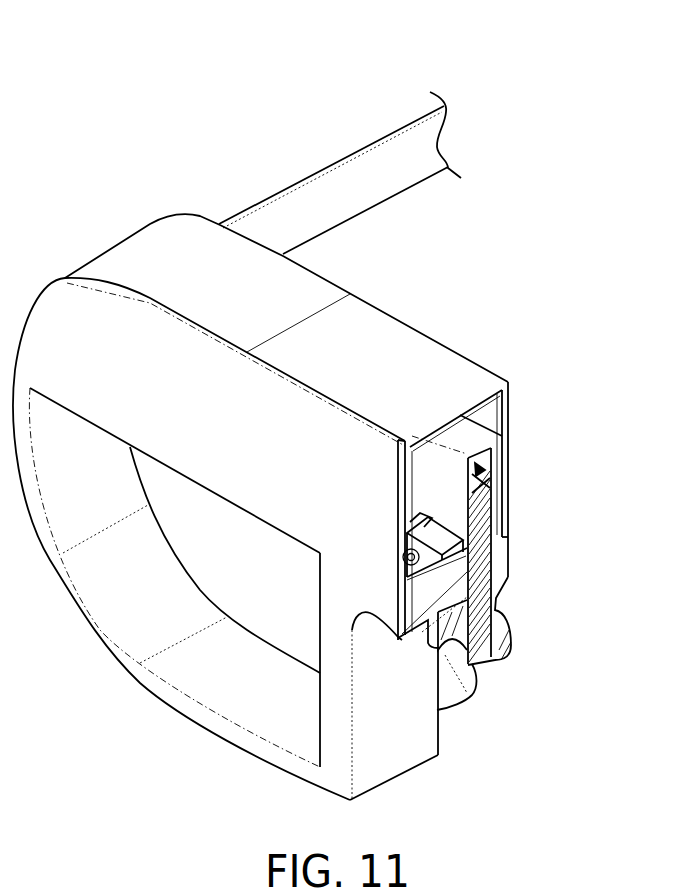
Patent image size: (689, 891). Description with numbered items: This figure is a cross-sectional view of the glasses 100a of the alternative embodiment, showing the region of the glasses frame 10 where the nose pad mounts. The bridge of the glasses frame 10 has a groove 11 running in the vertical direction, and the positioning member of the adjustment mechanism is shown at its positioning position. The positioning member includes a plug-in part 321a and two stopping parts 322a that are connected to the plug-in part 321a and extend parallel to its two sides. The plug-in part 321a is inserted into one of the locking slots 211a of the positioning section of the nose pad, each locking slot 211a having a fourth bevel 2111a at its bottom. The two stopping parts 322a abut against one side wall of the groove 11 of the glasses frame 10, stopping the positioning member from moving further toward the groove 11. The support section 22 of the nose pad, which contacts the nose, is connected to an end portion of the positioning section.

The glasses 100a is at (562, 99).
The glasses frame 10 is at (510, 407).
The groove 11 is at (504, 450).
The stopping parts 322a is at (428, 517).
The plug-in part 321a is at (435, 523).
The fourth bevel 2111a is at (470, 601).
The support section 22 is at (478, 688).
The locking slots 211a is at (468, 696).